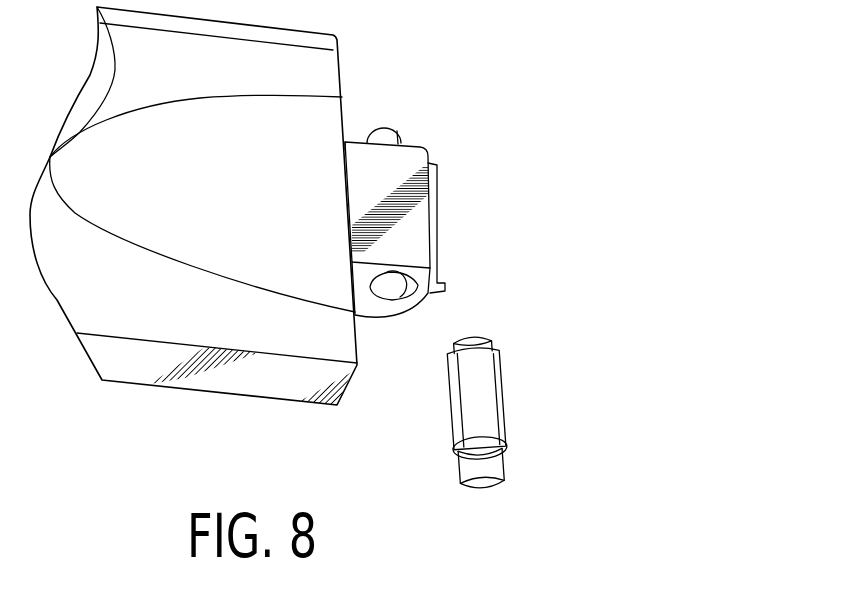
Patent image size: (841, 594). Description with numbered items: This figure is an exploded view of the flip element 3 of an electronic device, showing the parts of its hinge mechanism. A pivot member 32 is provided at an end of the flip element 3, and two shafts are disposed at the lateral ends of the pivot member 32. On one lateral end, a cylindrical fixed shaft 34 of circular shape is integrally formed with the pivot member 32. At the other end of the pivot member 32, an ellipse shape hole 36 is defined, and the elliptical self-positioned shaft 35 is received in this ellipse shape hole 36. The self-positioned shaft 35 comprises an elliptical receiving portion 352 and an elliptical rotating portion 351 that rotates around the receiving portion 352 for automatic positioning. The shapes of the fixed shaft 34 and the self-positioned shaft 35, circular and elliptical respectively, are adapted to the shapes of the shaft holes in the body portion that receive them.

The flip element 3 is at (647, 418).
The pivot member 32 is at (388, 202).
The fixed shaft 34 is at (385, 137).
The self-positioned shaft 35 is at (540, 416).
The rotating portion 351 is at (477, 392).
The receiving portion 352 is at (514, 466).
The ellipse shape hole 36 is at (396, 286).